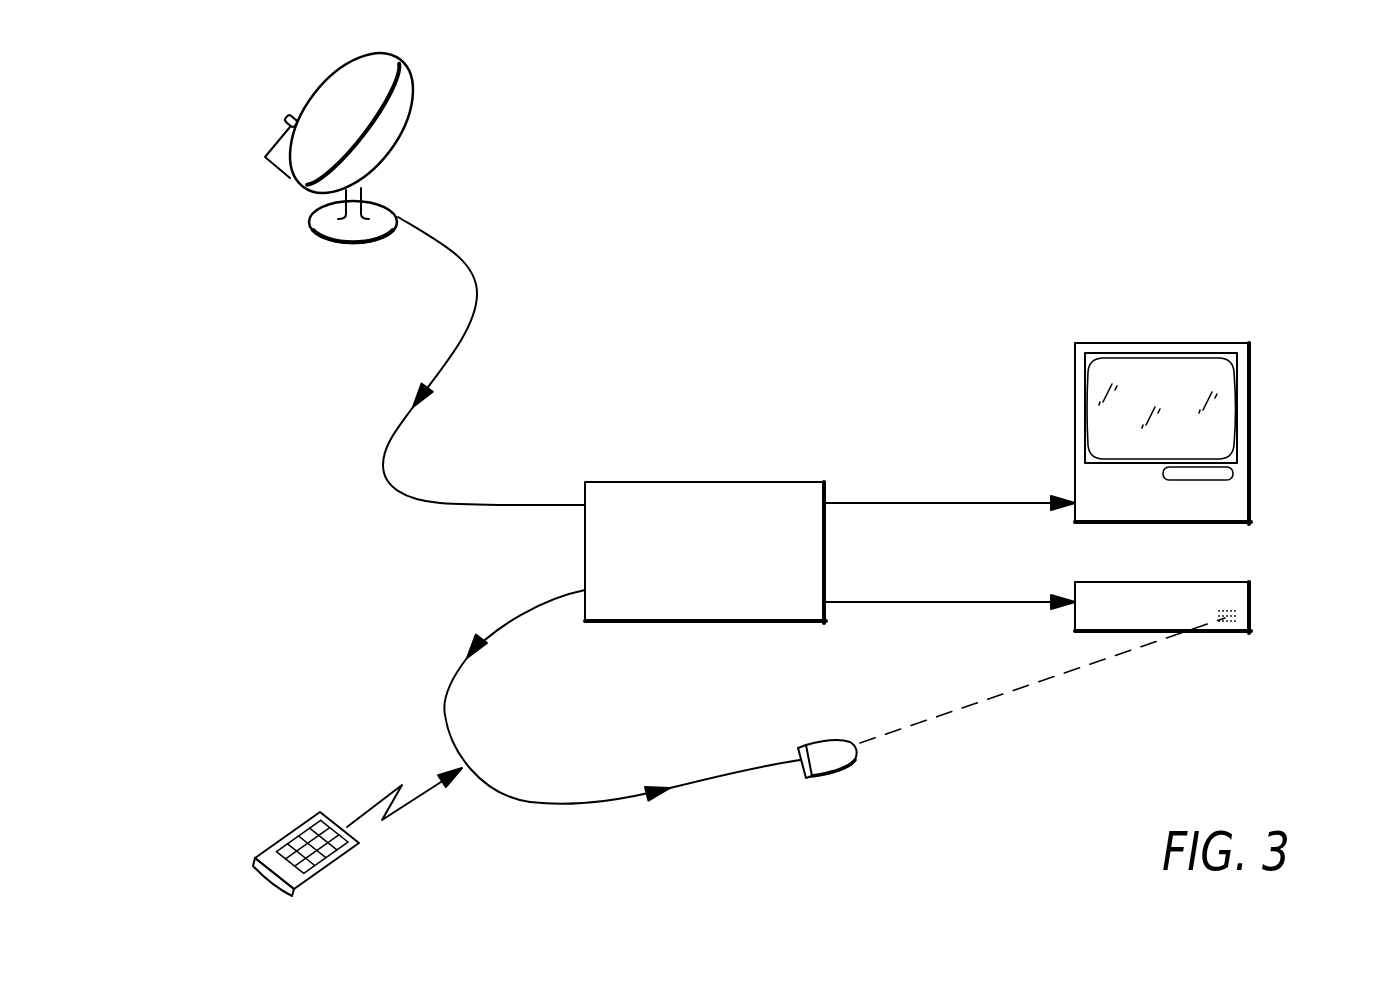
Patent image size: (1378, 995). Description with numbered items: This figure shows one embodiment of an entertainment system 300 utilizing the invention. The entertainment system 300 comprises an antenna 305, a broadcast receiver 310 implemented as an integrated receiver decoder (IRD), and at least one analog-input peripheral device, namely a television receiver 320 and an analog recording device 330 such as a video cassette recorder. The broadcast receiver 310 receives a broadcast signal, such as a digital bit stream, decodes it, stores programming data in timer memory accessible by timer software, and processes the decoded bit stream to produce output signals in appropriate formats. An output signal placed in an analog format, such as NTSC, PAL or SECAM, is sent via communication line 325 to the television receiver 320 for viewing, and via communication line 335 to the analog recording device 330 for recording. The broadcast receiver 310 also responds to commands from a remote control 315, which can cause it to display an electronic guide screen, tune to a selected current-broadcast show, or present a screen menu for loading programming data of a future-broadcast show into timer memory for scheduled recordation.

The entertainment system 300 is at (220, 628).
The antenna 305 is at (440, 121).
The broadcast receiver 310 is at (622, 482).
The remote control 315 is at (327, 868).
The television receiver 320 is at (1245, 378).
The communication line 325 is at (893, 503).
The analog recording device 330 is at (1250, 613).
The communication line 335 is at (950, 602).